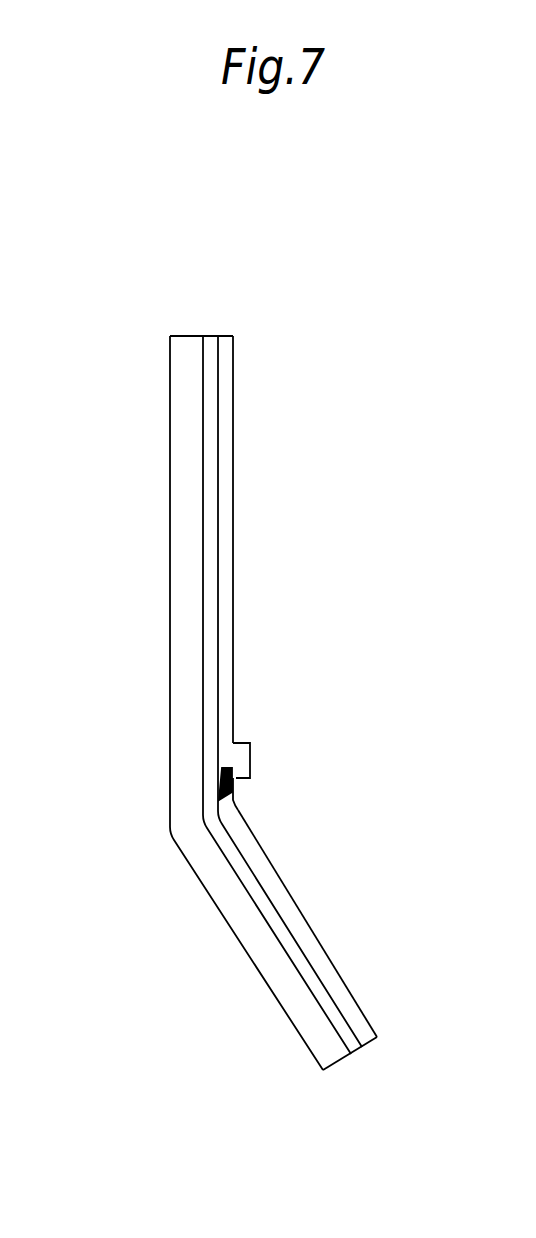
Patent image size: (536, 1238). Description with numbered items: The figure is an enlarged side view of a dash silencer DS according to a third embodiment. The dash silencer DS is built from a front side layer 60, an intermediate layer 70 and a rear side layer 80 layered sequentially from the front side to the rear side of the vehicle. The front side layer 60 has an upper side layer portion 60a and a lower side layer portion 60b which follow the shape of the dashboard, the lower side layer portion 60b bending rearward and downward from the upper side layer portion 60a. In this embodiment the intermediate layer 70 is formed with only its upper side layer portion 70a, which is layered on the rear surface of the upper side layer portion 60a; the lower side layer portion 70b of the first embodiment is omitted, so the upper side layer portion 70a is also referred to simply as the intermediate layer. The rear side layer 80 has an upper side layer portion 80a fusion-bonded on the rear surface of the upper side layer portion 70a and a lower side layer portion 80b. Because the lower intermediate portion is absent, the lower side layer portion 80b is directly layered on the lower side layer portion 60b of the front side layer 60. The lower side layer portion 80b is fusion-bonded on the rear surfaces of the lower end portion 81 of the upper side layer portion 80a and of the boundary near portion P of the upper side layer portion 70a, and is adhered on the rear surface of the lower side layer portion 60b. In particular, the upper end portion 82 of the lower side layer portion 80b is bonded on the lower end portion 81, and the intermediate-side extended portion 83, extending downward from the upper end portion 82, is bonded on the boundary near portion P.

The dash silencer DS is at (318, 425).
The front side layer 60 is at (214, 919).
The upper side layer portion 60a is at (170, 602).
The lower side layer portion 60b is at (198, 880).
The intermediate layer 70 is at (297, 990).
The upper side layer portion 70a is at (205, 645).
The lower side layer portion 70b is at (289, 942).
The rear side layer 80 is at (255, 682).
The upper side layer portion 80a is at (236, 524).
The lower side layer portion 80b is at (310, 932).
The lower end portion 81 is at (226, 752).
The upper end portion 82 is at (252, 755).
The intermediate-side extended portion 83 is at (238, 798).
The boundary near portion P is at (215, 800).